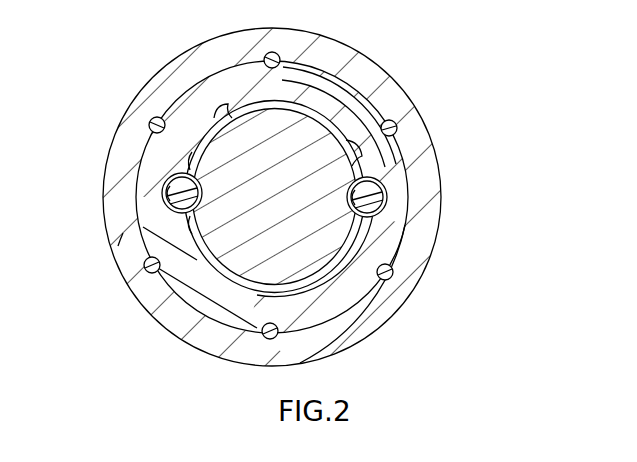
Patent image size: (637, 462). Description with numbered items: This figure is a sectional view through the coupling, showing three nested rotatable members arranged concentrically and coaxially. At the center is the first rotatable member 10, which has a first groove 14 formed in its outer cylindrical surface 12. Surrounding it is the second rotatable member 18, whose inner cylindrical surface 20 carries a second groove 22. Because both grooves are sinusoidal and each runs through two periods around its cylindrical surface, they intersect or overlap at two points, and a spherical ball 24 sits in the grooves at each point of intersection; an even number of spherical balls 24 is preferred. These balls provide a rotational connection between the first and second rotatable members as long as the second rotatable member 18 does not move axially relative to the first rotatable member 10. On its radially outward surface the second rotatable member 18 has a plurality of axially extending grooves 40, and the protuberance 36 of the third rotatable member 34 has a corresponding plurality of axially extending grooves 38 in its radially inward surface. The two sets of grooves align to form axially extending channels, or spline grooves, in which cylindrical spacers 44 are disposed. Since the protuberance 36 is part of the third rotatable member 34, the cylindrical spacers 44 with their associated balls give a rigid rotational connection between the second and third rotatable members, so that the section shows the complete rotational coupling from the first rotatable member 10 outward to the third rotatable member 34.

The first rotatable member 10 is at (283, 124).
The outer cylindrical surface 12 is at (226, 112).
The first groove 14 is at (202, 193).
The second rotatable member 18 is at (392, 243).
The inner cylindrical surface 20 is at (358, 164).
The second groove 22 is at (166, 188).
The spherical balls 24 is at (121, 235).
The third rotatable member 34 is at (428, 205).
The protuberance 36 is at (188, 299).
The axially extending grooves 38 is at (396, 122).
The axially extending grooves 40 is at (263, 55).
The cylindrical spacers 44 is at (151, 119).